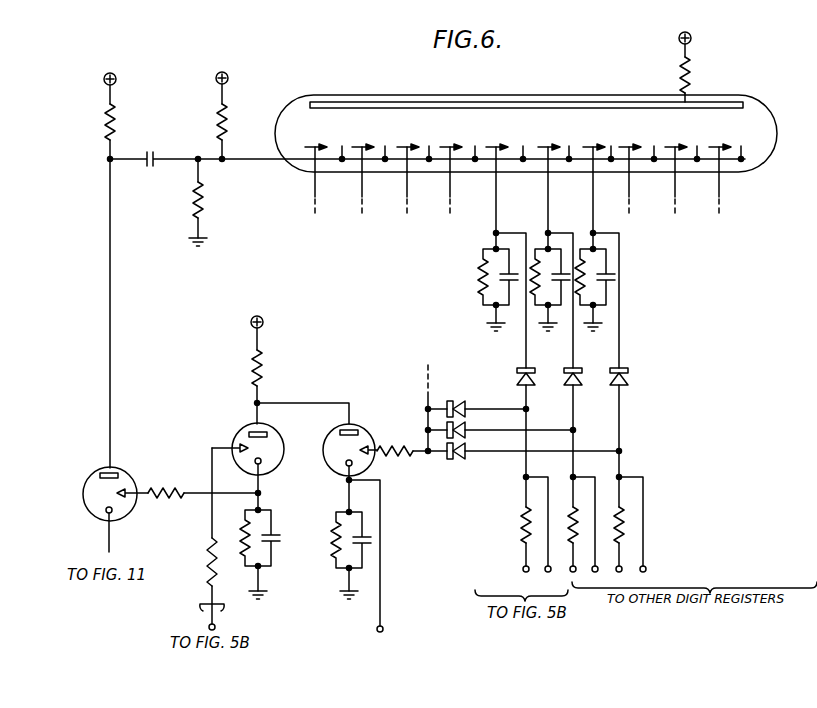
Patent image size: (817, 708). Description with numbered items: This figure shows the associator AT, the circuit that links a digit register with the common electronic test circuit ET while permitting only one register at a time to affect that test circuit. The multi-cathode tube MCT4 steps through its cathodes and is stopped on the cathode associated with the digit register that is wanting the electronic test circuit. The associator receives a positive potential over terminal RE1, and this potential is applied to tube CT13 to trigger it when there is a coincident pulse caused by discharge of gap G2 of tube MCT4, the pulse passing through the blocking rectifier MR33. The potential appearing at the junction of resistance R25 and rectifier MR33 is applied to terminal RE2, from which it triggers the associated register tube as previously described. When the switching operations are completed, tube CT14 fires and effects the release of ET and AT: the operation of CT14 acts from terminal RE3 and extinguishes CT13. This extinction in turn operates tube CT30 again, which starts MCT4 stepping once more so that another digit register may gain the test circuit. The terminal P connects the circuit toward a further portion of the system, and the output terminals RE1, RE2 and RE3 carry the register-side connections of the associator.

The multi-cathode tube MCT4 is at (526, 102).
The gap G2 is at (524, 178).
The rectifier MR33 is at (527, 421).
The resistance R25 is at (503, 521).
The terminal RE1 is at (508, 578).
The terminal RE2 is at (541, 534).
The terminal RE3 is at (224, 542).
The tube CT30 is at (91, 494).
The tube CT14 is at (265, 457).
The tube CT13 is at (362, 501).
The pulse input terminal to FIG. 11 P is at (109, 539).
The electronic test circuit ET is at (378, 557).